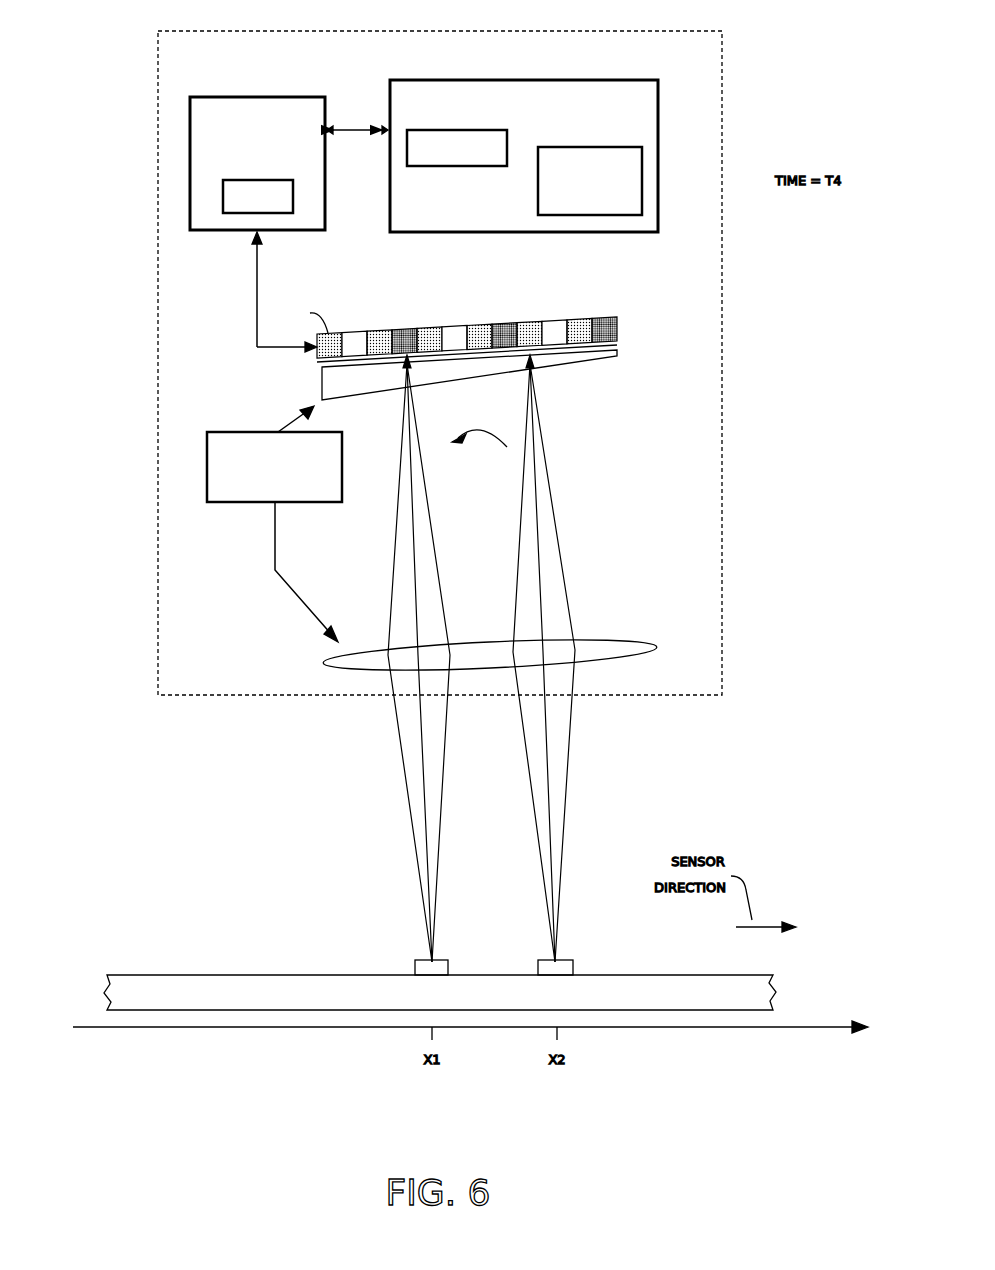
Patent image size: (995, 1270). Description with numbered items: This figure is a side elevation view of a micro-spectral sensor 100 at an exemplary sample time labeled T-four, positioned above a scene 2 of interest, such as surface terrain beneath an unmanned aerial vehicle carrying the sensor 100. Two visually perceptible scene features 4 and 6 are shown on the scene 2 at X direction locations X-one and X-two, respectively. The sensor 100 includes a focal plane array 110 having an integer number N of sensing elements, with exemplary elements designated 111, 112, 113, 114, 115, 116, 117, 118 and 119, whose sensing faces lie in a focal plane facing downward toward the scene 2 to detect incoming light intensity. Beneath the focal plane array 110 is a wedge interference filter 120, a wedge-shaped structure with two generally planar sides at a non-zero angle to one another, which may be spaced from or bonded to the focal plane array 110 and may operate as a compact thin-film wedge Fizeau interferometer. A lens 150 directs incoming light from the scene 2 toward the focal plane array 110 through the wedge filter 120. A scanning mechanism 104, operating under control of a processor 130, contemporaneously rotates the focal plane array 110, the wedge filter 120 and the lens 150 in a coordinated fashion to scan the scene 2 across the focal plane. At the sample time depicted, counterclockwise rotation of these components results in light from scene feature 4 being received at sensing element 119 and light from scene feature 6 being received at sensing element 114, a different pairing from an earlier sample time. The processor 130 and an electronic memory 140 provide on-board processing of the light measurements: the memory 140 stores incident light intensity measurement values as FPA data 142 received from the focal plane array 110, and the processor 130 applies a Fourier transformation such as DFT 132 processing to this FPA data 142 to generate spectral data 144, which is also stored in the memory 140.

The micro-spectral sensor 100 is at (255, 30).
The processor 130 is at (256, 97).
The DFT 132 is at (257, 180).
The electronic memory 140 is at (525, 80).
The FPA data 142 is at (456, 130).
The spectral data 144 is at (588, 147).
The focal plane array 110 is at (492, 302).
The sensing element 111 is at (604, 318).
The sensing element 112 is at (578, 318).
The sensing element 113 is at (554, 319).
The sensing element 114 is at (530, 320).
The sensing element 115 is at (504, 322).
The sensing element 116 is at (480, 324).
The sensing element 117 is at (455, 326).
The sensing element 118 is at (430, 327).
The sensing element 119 is at (405, 329).
The wedge interference filter 120 is at (322, 384).
The scanning mechanism 104 is at (243, 432).
The lens 150 is at (324, 661).
The scene 2 is at (103, 988).
The scene feature 4 is at (418, 960).
The scene feature 6 is at (541, 960).